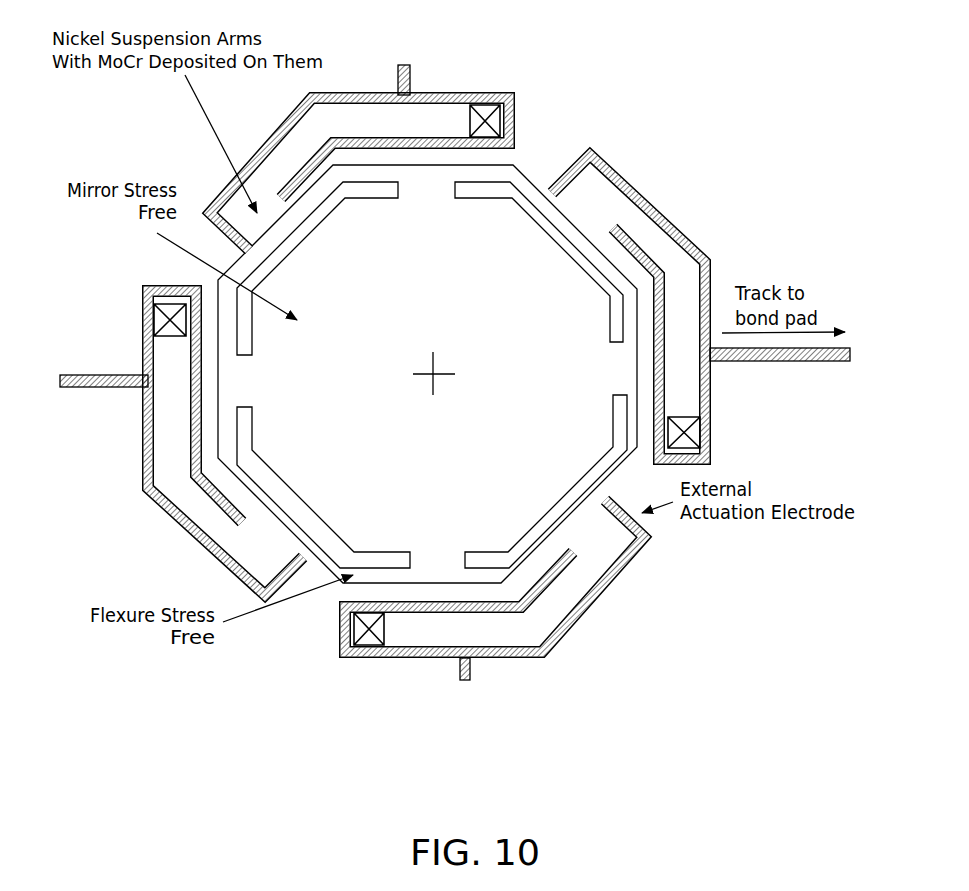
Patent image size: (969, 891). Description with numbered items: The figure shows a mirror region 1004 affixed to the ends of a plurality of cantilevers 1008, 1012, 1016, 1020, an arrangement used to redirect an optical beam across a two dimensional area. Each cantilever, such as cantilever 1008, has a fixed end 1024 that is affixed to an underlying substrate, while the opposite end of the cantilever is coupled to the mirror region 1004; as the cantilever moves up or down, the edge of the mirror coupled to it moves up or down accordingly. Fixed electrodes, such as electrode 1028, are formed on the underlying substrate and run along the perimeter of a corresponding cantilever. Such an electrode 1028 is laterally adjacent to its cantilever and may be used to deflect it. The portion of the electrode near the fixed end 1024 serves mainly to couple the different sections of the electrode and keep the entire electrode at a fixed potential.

The mirror region 1004 is at (513, 477).
The cantilever 1008 is at (353, 115).
The cantilever 1012 is at (682, 280).
The cantilever 1016 is at (555, 606).
The cantilever 1020 is at (200, 508).
The fixed end 1024 is at (496, 96).
The electrode 1028 is at (455, 90).